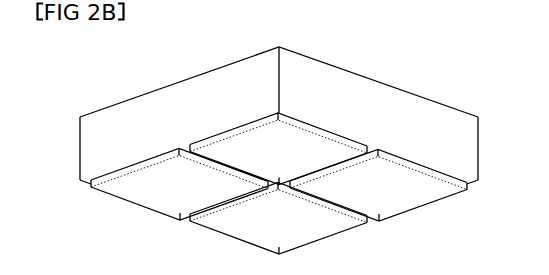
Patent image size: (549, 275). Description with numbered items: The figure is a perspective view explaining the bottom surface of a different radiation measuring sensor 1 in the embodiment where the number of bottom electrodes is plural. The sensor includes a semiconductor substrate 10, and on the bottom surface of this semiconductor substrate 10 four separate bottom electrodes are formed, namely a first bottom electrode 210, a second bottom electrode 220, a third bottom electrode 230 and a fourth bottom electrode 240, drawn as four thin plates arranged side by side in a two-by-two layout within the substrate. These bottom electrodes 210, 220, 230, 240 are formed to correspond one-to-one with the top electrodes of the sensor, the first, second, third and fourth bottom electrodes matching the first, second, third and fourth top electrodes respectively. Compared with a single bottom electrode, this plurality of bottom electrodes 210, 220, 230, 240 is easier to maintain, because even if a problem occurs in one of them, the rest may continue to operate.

The different radiation measuring sensor 1 is at (466, 48).
The semiconductor substrate 10 is at (96, 144).
The first bottom electrode 210 is at (147, 189).
The second bottom electrode 220 is at (290, 238).
The third bottom electrode 230 is at (272, 157).
The fourth bottom electrode 240 is at (398, 201).